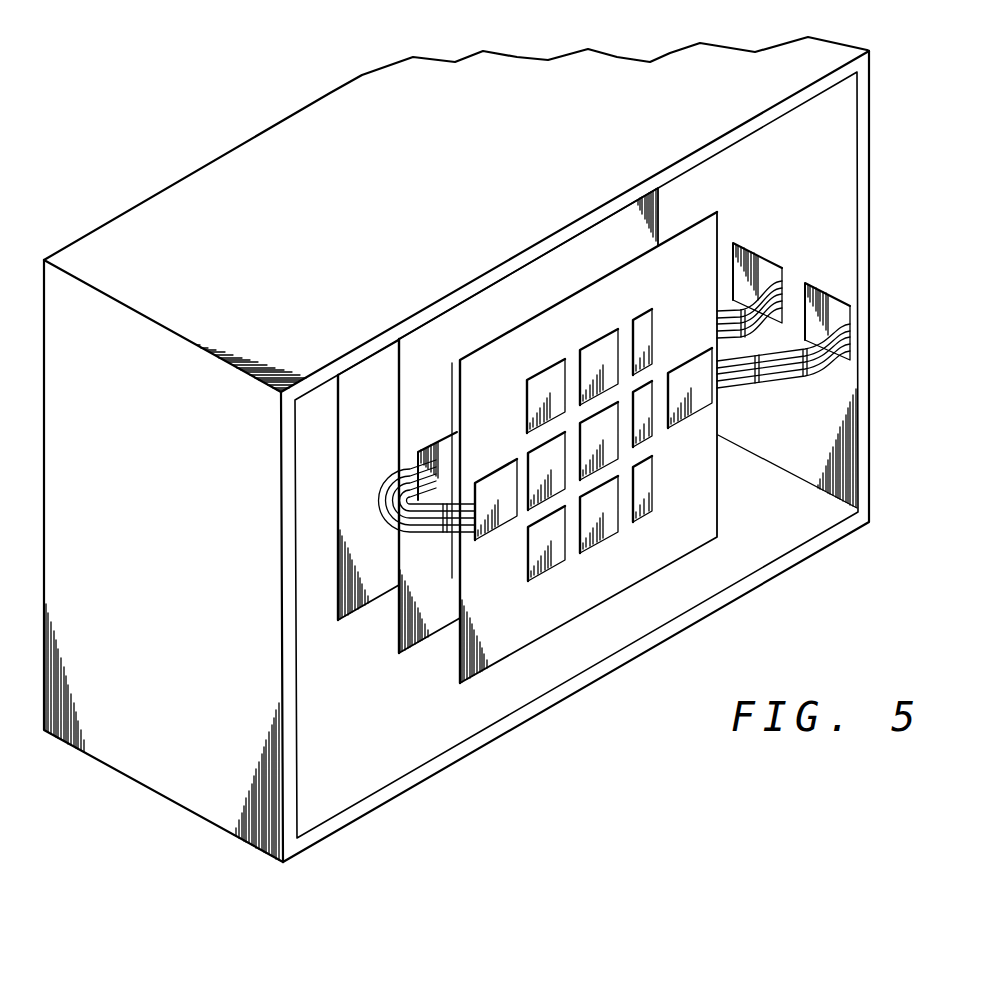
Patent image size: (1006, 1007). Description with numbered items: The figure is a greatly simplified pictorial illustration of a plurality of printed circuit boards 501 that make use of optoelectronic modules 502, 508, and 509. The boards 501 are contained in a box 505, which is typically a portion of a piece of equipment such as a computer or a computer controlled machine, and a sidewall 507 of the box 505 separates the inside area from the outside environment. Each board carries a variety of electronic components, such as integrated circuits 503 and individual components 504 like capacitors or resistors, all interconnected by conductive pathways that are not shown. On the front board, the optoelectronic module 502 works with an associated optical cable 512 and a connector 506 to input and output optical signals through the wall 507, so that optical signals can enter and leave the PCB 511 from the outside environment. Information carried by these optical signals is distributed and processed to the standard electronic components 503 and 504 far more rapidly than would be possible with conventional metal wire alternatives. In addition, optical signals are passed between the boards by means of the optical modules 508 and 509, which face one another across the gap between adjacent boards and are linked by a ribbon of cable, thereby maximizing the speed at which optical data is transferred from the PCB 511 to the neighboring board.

The printed circuit boards 501 is at (478, 668).
The optoelectronic module 502 is at (415, 640).
The integrated circuits 503 is at (538, 378).
The individual components 504 is at (653, 326).
The box 505 is at (897, 618).
The connector 506 is at (834, 284).
The sidewall 507 is at (848, 133).
The optoelectronic module 508 is at (487, 481).
The optoelectronic module 509 is at (441, 437).
The PCB 511 is at (700, 548).
The optical cable 512 is at (781, 391).